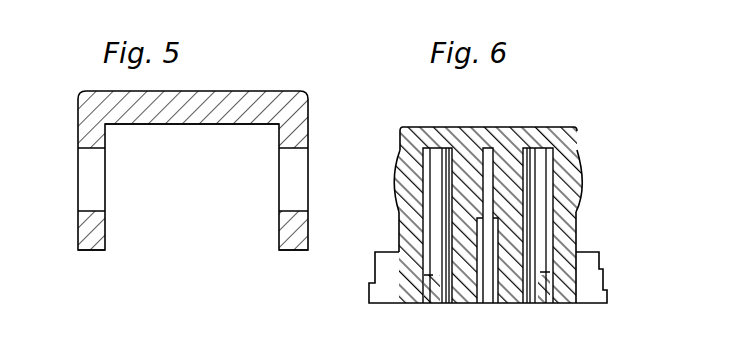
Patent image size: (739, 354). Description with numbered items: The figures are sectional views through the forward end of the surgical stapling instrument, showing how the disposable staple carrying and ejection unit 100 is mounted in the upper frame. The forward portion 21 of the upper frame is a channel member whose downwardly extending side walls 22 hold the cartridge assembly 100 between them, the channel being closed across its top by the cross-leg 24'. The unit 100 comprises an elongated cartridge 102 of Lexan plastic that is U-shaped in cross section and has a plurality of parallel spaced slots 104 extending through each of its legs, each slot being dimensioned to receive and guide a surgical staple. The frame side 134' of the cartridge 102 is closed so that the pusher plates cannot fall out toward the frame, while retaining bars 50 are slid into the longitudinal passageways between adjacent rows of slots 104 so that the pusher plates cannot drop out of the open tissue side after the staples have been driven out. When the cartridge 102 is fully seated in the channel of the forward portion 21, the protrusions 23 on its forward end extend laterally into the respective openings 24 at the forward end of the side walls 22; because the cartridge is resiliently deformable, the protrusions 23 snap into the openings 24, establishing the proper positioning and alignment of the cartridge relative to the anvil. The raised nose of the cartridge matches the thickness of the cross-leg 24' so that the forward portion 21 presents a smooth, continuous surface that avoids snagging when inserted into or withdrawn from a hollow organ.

In FIG. 5, the forward portion 21 is at (219, 91).
In FIG. 5, the channel cross-leg 24' is at (192, 139).
In FIG. 6, the channel cross-leg 24' is at (416, 297).
In FIG. 5, the openings 24 is at (189, 179).
In FIG. 5, the side walls 22 is at (91, 243).
In FIG. 6, the staple carrying and ejection unit 100 is at (489, 125).
In FIG. 6, the protrusions 23 is at (394, 192).
In FIG. 6, the cartridge 102 is at (578, 237).
In FIG. 6, the slots 104 is at (433, 266).
In FIG. 6, the retaining bar 50 is at (432, 302).
In FIG. 6, the frame side 134' is at (568, 297).